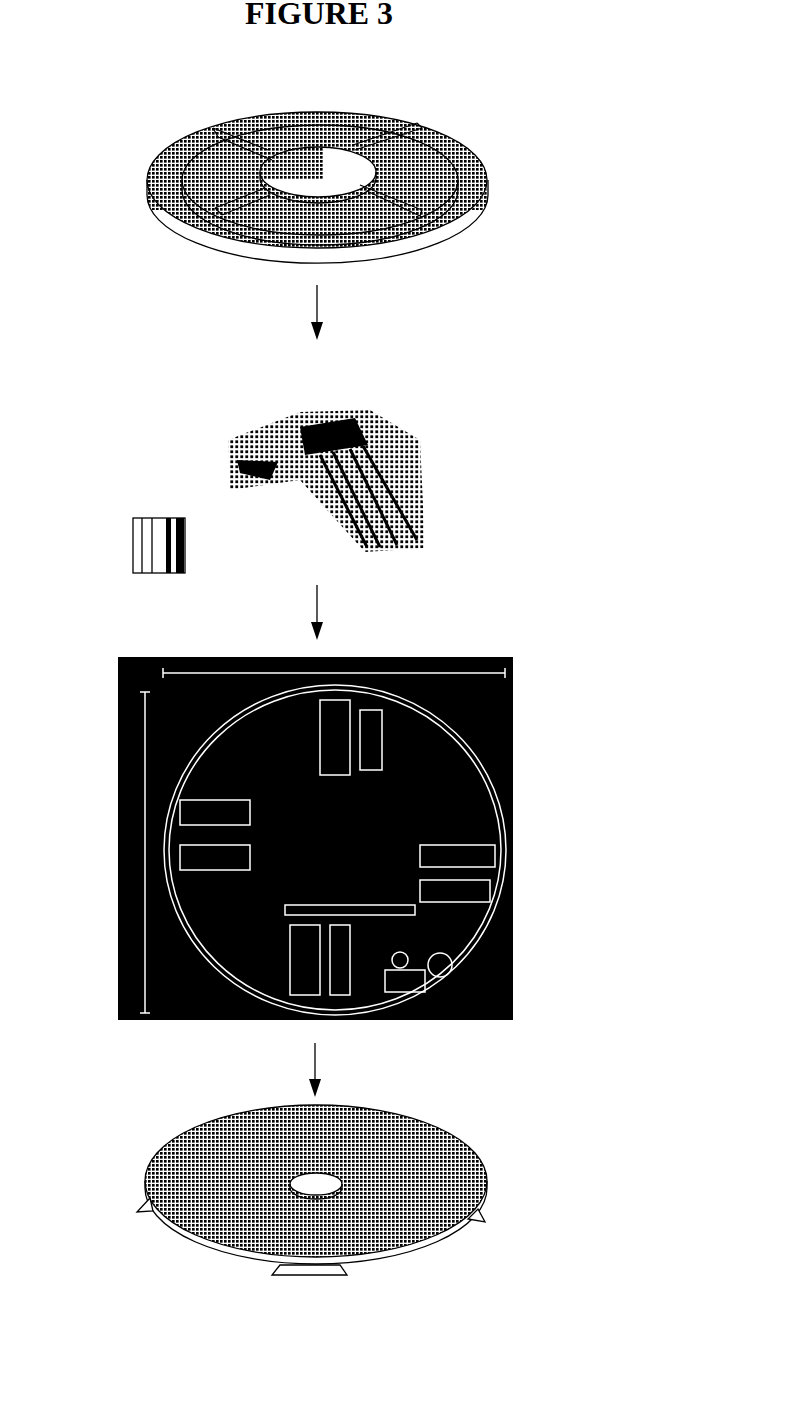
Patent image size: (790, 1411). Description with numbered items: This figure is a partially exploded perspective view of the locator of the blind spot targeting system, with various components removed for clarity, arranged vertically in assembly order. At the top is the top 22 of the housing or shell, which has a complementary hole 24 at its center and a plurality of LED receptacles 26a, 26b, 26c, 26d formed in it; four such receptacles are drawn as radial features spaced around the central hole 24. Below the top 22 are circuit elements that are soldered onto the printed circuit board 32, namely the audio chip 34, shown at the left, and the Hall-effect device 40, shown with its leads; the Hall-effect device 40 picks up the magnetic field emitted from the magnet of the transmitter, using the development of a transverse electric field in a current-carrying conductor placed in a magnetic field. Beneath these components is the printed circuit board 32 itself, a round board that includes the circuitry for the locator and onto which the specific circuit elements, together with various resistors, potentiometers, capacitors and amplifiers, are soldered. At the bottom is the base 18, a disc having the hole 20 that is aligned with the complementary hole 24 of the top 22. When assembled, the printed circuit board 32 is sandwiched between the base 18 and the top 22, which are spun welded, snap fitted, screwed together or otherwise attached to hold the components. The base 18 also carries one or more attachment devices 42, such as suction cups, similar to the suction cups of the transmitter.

The base 18 is at (438, 1162).
The hole 20 is at (314, 1186).
The top 22 is at (460, 182).
The complementary hole 24 is at (316, 196).
The LED receptacle 26a is at (248, 142).
The LED receptacle 26b is at (382, 148).
The LED receptacle 26c is at (432, 213).
The LED receptacle 26d is at (214, 212).
The printed circuit board 32 is at (540, 734).
The audio chip 34 is at (162, 530).
The Hall-effect device 40 is at (398, 441).
The attachment device 42 is at (482, 1217).